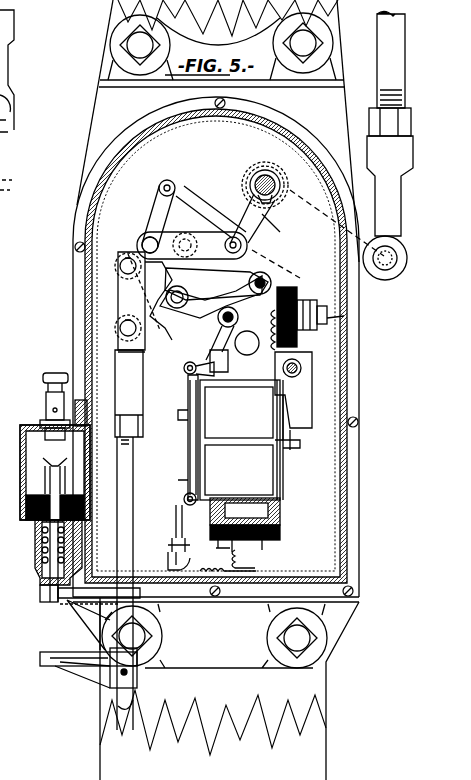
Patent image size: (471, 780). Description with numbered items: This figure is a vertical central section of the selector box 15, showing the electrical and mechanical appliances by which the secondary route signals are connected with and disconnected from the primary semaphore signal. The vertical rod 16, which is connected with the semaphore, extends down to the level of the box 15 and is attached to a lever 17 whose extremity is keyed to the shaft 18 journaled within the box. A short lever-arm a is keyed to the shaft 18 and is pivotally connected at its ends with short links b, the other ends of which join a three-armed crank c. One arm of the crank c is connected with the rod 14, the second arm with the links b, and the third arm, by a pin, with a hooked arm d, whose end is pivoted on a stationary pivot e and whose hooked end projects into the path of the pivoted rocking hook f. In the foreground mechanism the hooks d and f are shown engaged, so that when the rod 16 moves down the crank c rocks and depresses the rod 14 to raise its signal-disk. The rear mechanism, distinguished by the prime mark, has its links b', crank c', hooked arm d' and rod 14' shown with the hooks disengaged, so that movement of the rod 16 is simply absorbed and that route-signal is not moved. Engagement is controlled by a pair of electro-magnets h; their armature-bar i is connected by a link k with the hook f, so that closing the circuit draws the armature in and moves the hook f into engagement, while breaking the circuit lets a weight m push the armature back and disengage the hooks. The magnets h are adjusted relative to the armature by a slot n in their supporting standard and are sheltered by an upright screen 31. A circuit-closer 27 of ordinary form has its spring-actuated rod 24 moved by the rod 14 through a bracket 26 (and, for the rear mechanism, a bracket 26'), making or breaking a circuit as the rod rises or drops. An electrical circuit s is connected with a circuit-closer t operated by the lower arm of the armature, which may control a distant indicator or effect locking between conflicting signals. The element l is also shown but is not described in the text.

The selector box 15 is at (212, 147).
The shaft 18 is at (252, 183).
The lever-arm a is at (307, 234).
The link b is at (192, 245).
The link b' is at (211, 212).
The three-armed crank c is at (143, 302).
The three-armed crank c' is at (158, 216).
The rod 14 is at (120, 540).
The rod 14' is at (127, 292).
The hooked arm d is at (211, 297).
The hooked arm d' is at (216, 280).
The stationary pivot e is at (271, 281).
The rocking hook f is at (222, 333).
The weight m is at (247, 343).
The slot n is at (302, 368).
The bracket l is at (306, 397).
The link k is at (193, 356).
The electro-magnets h is at (241, 440).
The armature-bar i is at (196, 442).
The screen or shield 31 is at (183, 504).
The electrical circuit s is at (231, 563).
The circuit-closer t is at (179, 537).
The vertical rod 16 is at (390, 123).
The lever 17 is at (378, 240).
The circuit-closer 27 is at (55, 446).
The spring-actuated rod 24 is at (58, 561).
The bracket 26 is at (77, 645).
The bracket 26' is at (89, 624).